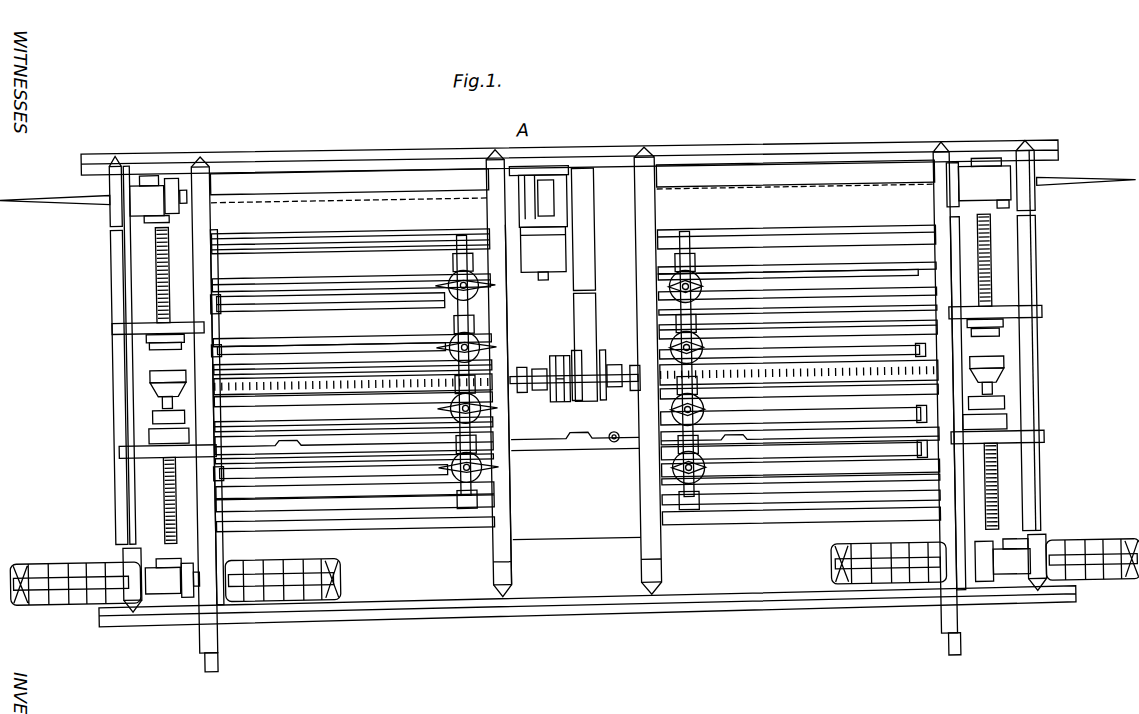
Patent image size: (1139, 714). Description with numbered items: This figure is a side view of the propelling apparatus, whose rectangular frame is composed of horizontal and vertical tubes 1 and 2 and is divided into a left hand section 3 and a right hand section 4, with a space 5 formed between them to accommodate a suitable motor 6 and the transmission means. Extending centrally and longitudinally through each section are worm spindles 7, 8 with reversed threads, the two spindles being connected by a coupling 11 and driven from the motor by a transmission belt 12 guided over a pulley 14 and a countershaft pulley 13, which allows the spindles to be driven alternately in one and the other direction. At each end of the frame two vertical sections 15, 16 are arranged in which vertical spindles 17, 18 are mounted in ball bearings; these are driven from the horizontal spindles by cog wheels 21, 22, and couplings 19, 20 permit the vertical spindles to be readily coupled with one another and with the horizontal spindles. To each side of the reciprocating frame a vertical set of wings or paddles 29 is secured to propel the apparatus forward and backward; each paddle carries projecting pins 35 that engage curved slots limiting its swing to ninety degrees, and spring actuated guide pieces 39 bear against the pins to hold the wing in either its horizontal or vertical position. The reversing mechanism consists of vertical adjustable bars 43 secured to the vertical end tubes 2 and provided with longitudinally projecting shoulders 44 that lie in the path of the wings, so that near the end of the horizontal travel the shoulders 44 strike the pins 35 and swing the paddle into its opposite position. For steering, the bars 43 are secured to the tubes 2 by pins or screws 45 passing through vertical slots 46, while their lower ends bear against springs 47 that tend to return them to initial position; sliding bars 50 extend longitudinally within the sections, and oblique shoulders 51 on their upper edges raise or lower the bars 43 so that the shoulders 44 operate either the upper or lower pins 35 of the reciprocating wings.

The horizontal tubes 1 is at (303, 157).
The vertical tubes 2 is at (113, 224).
The left hand section 3 is at (350, 231).
The right hand section 4 is at (796, 225).
The space 5 is at (573, 344).
The motor 6 is at (547, 265).
The worm spindle 7 is at (290, 384).
The worm spindle 8 is at (760, 370).
The coupling 11 is at (560, 371).
The transmission belt 12 is at (598, 337).
The countershaft pulley 13 is at (600, 369).
The pulley 14 is at (598, 237).
The vertical section 15 is at (113, 284).
The vertical section 16 is at (145, 492).
The vertical spindle 17 is at (115, 252).
The vertical spindle 18 is at (110, 531).
The coupling 19 is at (148, 338).
The coupling 20 is at (125, 440).
The cog wheel 21 is at (130, 379).
The cog wheel 22 is at (115, 403).
The wings or paddles 29 is at (508, 352).
The pin 35 is at (452, 416).
The spring actuated guide piece 39 is at (797, 259).
The vertical adjustable bar 43 is at (216, 272).
The shoulders 44 is at (920, 451).
The pins or screws 45 is at (220, 298).
The vertical slots 46 is at (647, 477).
The springs 47 is at (223, 494).
The sliding bar 50 is at (340, 452).
The oblique shoulders 51 is at (242, 442).